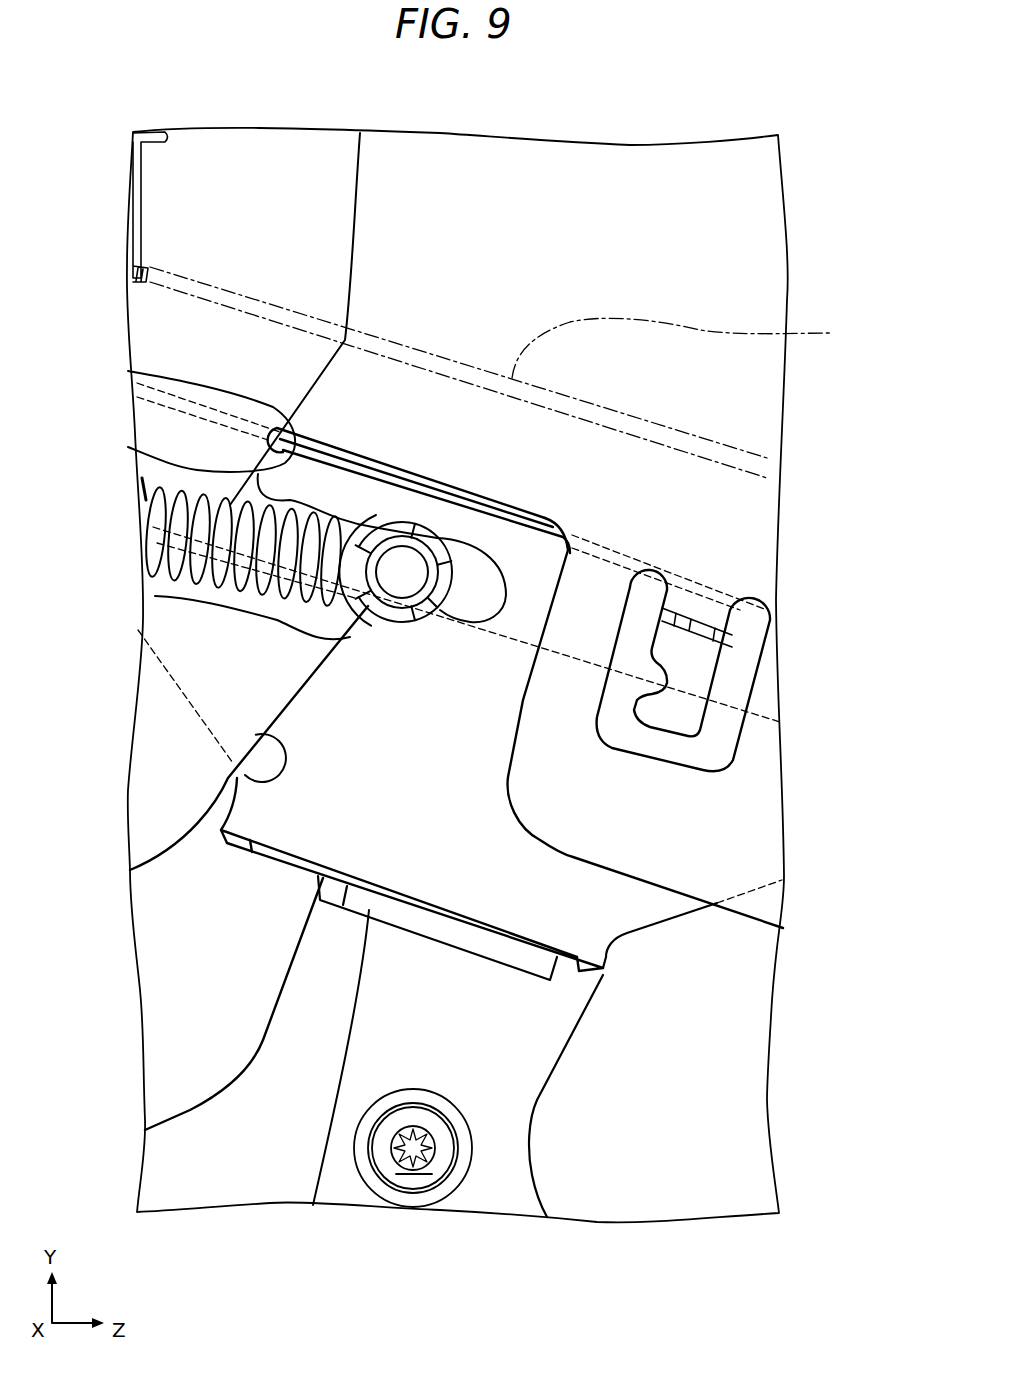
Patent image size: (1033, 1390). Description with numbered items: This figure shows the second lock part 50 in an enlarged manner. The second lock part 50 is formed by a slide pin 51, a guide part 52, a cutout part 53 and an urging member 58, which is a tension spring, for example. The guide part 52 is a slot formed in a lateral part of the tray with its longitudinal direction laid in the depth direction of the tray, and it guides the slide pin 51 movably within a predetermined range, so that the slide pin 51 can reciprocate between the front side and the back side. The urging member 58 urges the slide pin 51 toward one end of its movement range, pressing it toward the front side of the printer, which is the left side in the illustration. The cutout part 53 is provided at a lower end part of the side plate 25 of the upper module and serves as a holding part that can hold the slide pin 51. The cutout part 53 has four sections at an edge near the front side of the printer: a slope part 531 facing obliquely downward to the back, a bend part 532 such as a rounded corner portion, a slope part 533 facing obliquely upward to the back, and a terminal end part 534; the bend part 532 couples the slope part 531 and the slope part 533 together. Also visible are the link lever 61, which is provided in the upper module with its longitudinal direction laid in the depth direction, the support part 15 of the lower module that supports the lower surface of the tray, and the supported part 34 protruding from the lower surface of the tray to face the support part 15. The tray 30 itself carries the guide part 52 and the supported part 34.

The second lock part 50 is at (516, 106).
The link lever 61 is at (509, 372).
The slide pin 51 is at (402, 562).
The guide part 52 is at (480, 568).
The bracket 30 is at (485, 706).
The side plate 25 is at (750, 802).
The terminal end part 534 is at (135, 372).
The slope part 533 is at (243, 470).
The urging member 58 is at (175, 548).
The bend part 532 is at (155, 596).
The slope part 531 is at (237, 782).
The supported part 34 is at (273, 853).
The support part 15 is at (313, 1205).
The cutout part 53 is at (324, 712).